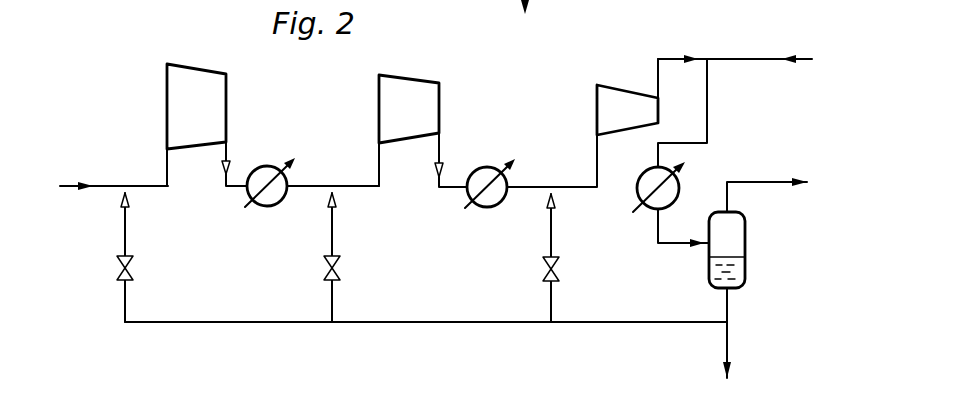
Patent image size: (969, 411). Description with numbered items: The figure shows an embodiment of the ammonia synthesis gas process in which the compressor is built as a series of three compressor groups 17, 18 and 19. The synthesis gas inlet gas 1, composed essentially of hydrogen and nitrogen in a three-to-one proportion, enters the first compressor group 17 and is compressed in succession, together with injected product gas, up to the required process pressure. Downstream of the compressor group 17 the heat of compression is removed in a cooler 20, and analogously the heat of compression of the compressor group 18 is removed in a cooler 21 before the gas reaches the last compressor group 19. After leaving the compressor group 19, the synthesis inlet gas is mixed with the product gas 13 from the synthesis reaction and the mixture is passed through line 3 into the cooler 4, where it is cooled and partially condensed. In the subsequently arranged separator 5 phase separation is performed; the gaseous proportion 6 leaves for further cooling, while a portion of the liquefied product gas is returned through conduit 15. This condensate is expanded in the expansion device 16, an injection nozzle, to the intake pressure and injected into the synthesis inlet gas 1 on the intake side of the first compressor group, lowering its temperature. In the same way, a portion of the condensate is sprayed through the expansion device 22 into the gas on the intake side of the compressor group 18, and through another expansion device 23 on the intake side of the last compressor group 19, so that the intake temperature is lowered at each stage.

The synthesis gas inlet gas 1 is at (73, 183).
The discharge line from last turbine stage 3 is at (708, 125).
The cooler 4 is at (675, 192).
The separator 5 is at (737, 245).
The gaseous proportion 6 is at (775, 182).
The conduit for product gas 13 is at (762, 61).
The conduit 15 is at (435, 321).
The expansion device 16 is at (134, 268).
The compressor group 17 is at (172, 110).
The compressor group 18 is at (383, 110).
The compressor group 19 is at (603, 110).
The cooler 20 is at (265, 172).
The cooler 21 is at (484, 172).
The expansion device 22 is at (341, 268).
The expansion device 23 is at (560, 270).